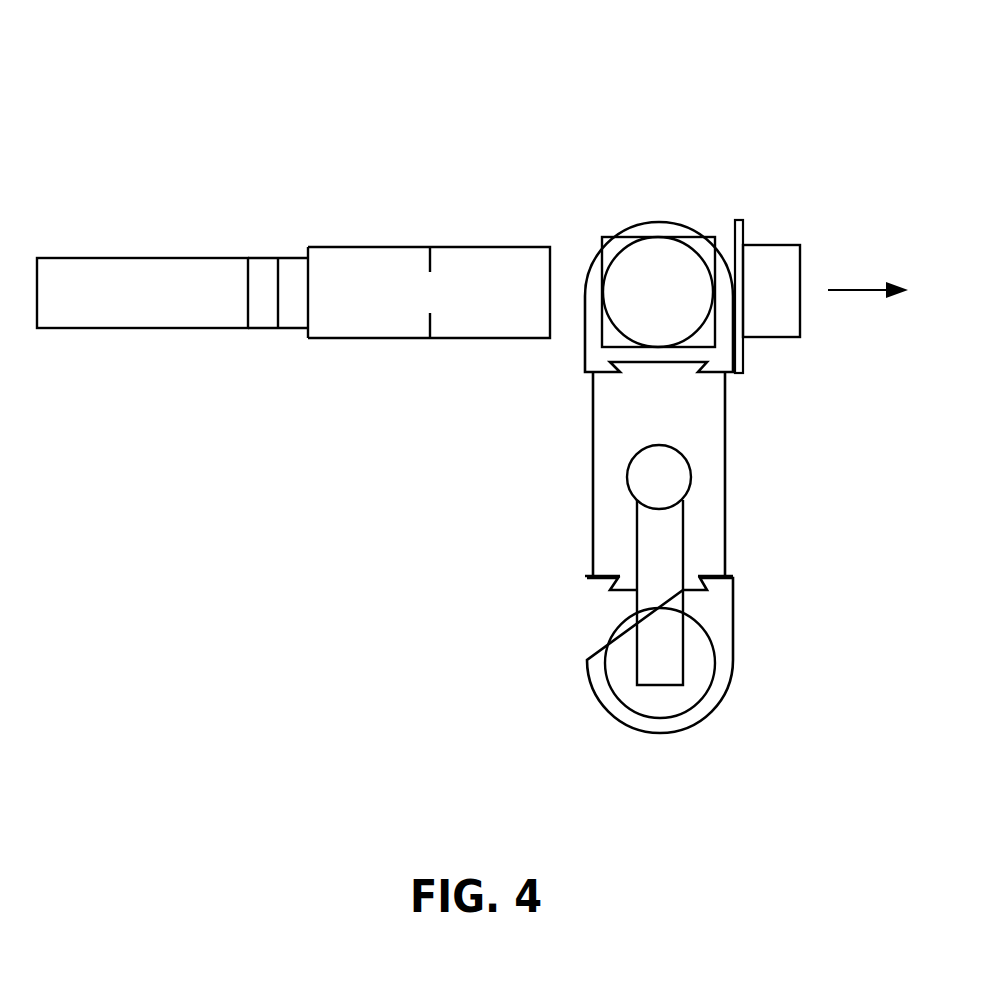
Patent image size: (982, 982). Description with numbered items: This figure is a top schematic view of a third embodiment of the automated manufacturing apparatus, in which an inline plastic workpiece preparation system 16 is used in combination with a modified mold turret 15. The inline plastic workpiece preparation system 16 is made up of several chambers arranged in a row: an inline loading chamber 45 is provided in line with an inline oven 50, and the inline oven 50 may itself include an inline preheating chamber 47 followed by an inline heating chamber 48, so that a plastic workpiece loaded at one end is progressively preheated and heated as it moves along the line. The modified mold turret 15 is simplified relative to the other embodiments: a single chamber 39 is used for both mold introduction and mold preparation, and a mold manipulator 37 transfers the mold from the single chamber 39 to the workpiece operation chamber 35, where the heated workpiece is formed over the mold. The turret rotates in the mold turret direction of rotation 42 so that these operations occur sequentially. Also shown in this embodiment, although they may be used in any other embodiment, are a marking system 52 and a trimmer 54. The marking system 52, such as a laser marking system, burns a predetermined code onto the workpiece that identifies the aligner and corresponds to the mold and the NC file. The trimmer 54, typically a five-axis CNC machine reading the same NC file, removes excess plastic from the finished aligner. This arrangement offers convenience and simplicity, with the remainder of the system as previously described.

The inline plastic workpiece preparation system 16 is at (175, 67).
The inline oven 50 is at (370, 165).
The inline loading chamber 45 is at (145, 257).
The inline preheating chamber 47 is at (372, 247).
The inline heating chamber 48 is at (522, 247).
The modified mold turret 15 is at (667, 155).
The workpiece operation chamber 35 is at (658, 237).
The marking system 52 is at (739, 220).
The trimmer 54 is at (772, 245).
The mold turret direction of rotation 42 is at (537, 707).
The mold manipulator 37 is at (683, 555).
The single chamber 39 is at (658, 718).